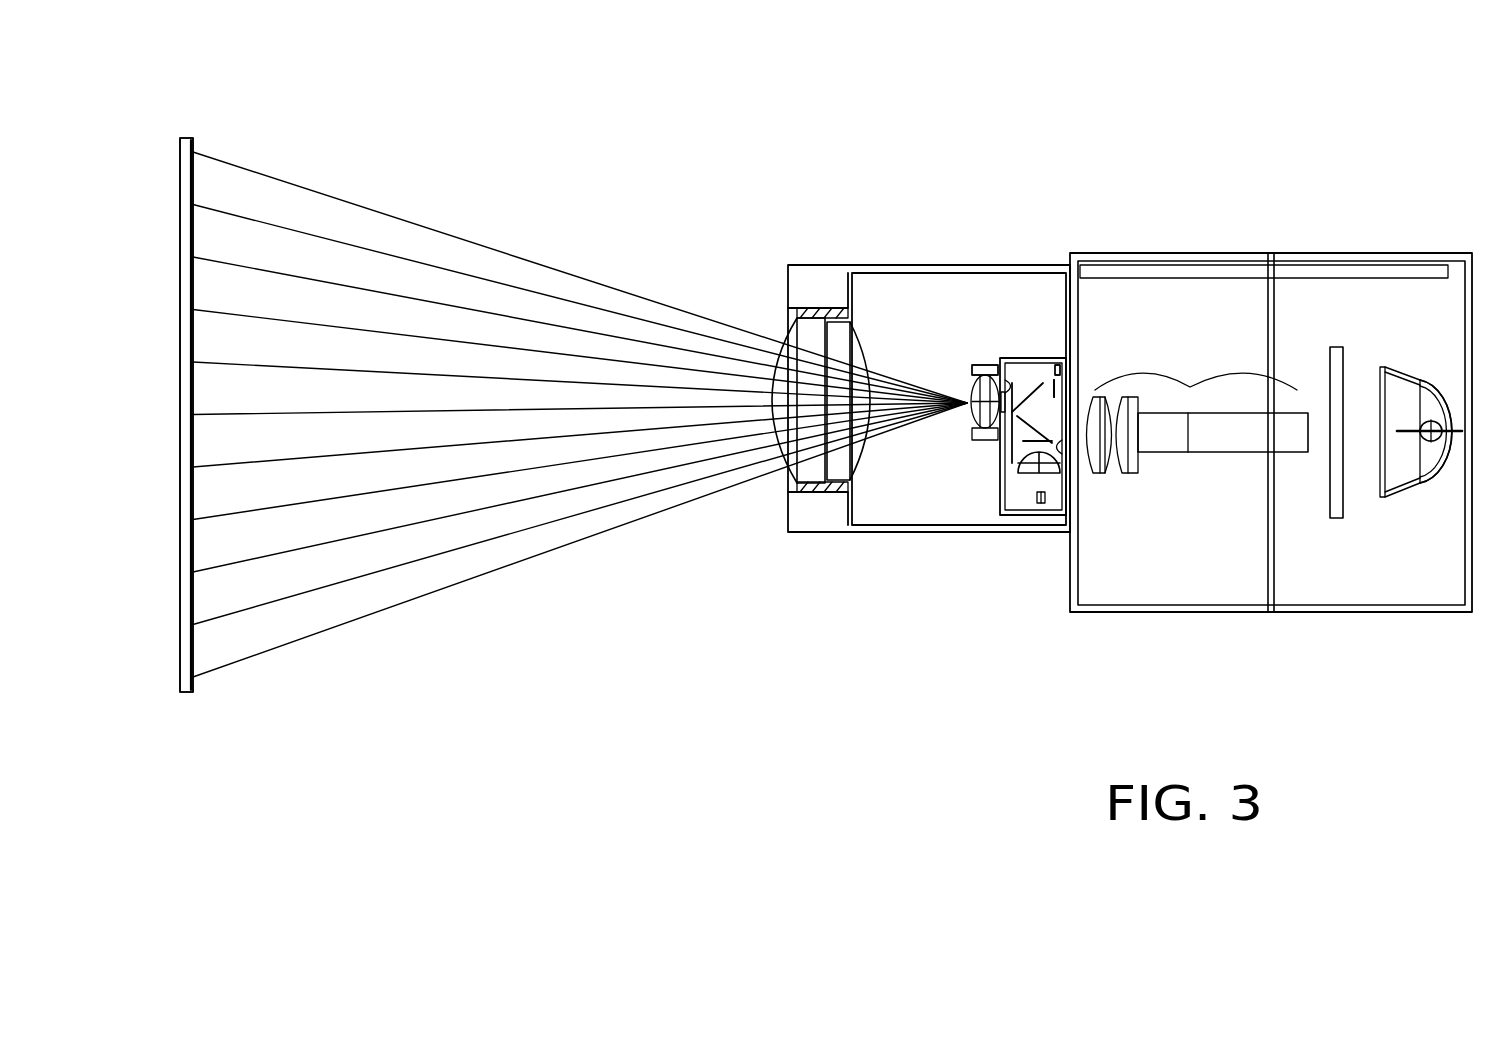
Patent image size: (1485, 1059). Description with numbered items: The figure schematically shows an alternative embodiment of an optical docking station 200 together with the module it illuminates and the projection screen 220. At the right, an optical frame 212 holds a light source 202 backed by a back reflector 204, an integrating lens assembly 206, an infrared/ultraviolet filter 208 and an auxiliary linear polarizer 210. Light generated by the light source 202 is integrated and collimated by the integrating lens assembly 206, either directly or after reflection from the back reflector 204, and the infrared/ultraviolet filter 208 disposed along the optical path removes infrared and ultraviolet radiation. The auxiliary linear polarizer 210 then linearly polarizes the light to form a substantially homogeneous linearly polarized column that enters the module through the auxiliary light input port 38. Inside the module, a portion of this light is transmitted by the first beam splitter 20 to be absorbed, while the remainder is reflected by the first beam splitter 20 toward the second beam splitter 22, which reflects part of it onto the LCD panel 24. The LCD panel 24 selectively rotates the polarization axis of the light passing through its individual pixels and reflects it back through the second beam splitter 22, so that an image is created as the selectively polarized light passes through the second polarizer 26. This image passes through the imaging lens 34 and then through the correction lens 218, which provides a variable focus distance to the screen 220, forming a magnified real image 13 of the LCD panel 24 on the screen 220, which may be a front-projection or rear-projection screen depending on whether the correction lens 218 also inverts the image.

The magnified real image 13 is at (197, 180).
The optical docking station 200 is at (953, 128).
The correction lens 218 is at (788, 333).
The screen 220 is at (198, 683).
The second polarizer 26 is at (997, 360).
The second beam splitter 22 is at (1030, 367).
The LCD panel 24 is at (1042, 367).
The imaging lens 34 is at (972, 442).
The first beam splitter 20 is at (1000, 440).
The auxiliary light input port 38 is at (1052, 441).
The auxiliary linear polarizer 210 is at (1093, 397).
The integrating lens assembly 206 is at (1190, 387).
The infrared/ultraviolet filter 208 is at (1338, 347).
The optical frame 212 is at (1468, 253).
The light source 202 is at (1441, 395).
The back reflector 204 is at (1422, 485).